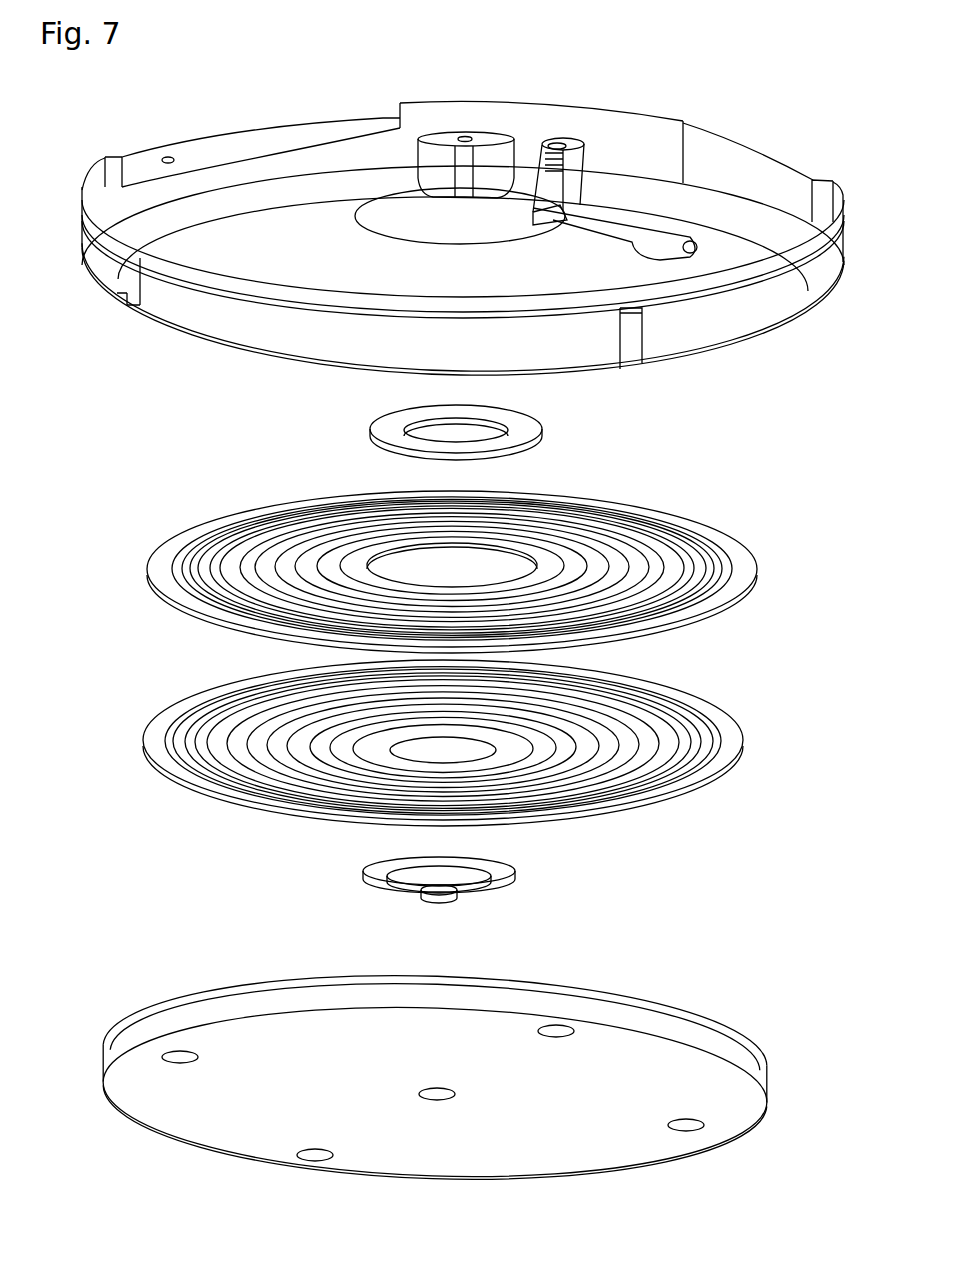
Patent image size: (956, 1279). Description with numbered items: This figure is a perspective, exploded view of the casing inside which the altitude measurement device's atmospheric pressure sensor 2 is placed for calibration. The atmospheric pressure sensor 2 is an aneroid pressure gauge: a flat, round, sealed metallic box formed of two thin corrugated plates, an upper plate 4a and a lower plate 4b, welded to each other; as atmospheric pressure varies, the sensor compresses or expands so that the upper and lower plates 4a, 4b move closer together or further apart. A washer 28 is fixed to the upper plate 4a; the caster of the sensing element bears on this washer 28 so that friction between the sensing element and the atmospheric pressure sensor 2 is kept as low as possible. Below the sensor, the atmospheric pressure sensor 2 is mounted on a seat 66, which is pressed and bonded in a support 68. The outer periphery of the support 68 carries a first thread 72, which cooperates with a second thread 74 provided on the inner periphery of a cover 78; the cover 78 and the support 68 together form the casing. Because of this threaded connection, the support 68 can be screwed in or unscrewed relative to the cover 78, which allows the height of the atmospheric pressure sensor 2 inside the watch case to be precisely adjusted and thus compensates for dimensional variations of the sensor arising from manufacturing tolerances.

The cover 78 is at (733, 130).
The second thread 74 is at (712, 324).
The washer 28 is at (525, 435).
The atmospheric pressure sensor 2 is at (493, 653).
The upper plate 4a is at (745, 577).
The lower plate 4b is at (738, 727).
The seat 66 is at (498, 888).
The support 68 is at (466, 1058).
The first thread 72 is at (667, 1030).